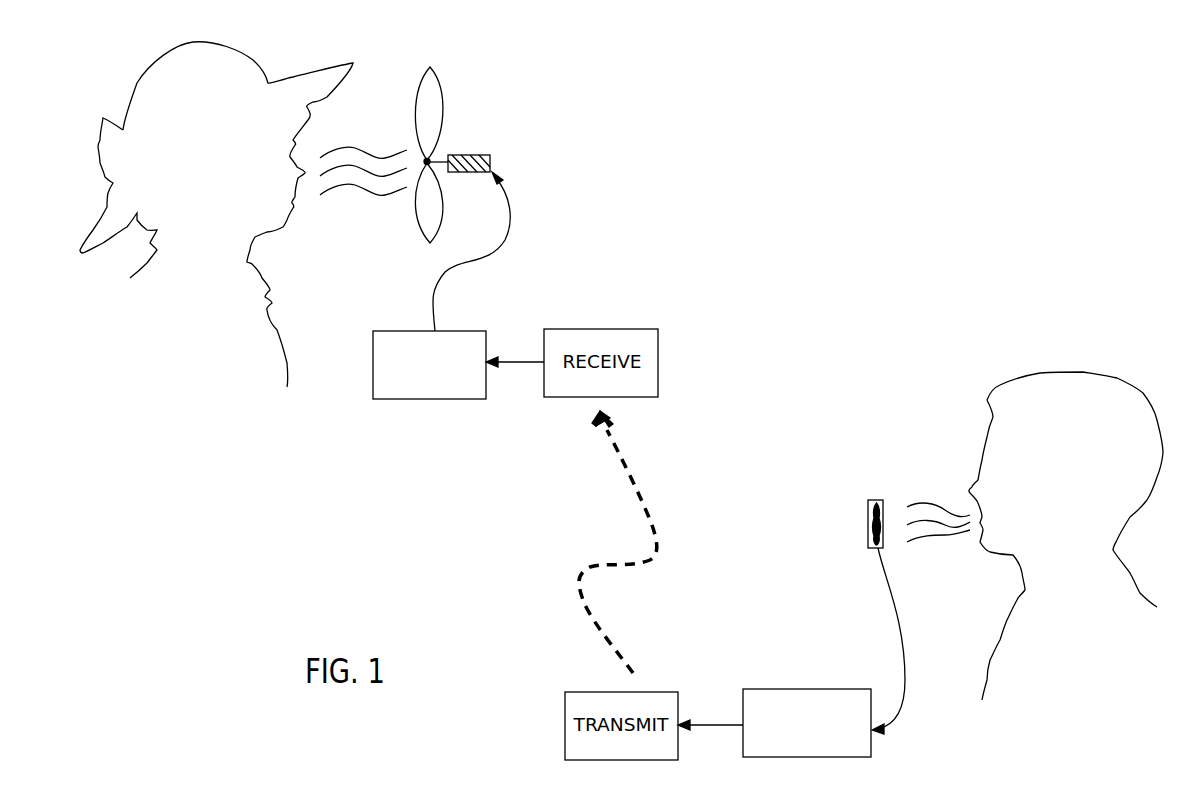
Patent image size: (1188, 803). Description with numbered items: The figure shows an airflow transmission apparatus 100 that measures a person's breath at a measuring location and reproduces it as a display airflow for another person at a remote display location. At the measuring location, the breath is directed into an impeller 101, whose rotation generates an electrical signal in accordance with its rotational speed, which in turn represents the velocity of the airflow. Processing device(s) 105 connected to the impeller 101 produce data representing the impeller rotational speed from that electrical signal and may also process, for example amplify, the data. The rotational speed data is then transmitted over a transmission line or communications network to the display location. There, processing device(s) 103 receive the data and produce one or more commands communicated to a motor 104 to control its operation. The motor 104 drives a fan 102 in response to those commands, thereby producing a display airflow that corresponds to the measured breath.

The apparatus 100 is at (833, 190).
The impeller 101 is at (868, 502).
The fan 102 is at (437, 82).
The processing device(s) 103 is at (402, 400).
The motor 104 is at (490, 156).
The processing device(s) 105 is at (788, 688).